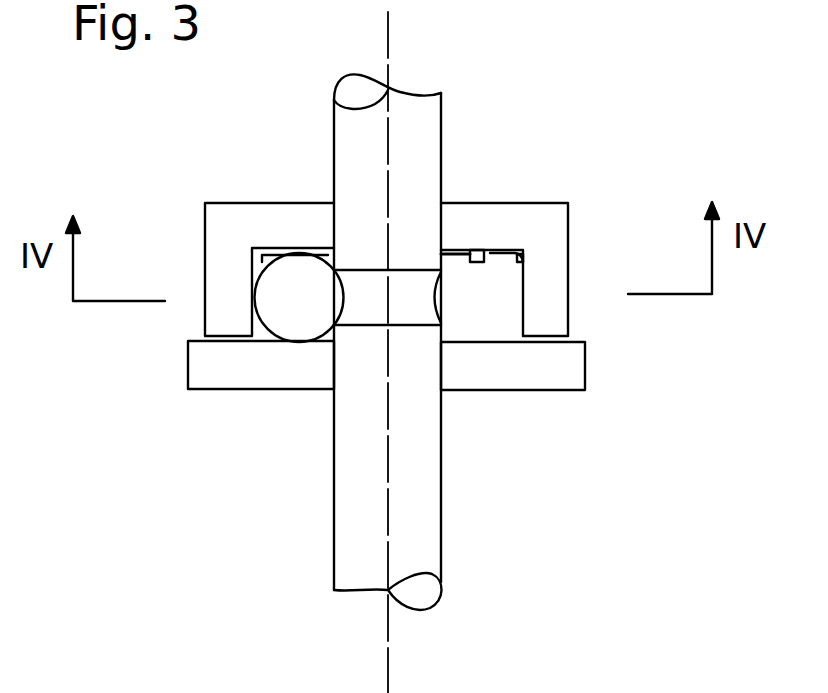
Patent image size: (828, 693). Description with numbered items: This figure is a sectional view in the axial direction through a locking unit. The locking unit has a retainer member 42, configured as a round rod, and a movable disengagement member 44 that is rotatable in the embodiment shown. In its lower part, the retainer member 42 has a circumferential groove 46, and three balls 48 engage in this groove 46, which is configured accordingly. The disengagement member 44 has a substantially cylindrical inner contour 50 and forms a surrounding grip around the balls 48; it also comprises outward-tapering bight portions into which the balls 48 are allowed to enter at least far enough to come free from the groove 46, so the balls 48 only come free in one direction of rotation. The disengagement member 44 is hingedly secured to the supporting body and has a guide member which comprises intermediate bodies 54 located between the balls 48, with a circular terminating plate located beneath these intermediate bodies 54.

The retainer member 42 is at (415, 128).
The disengagement member 44 is at (547, 228).
The circumferential groove 46 is at (355, 307).
The balls 48 is at (278, 280).
The cylindrical inner contour 50 is at (502, 285).
The intermediate bodies 54 is at (457, 298).